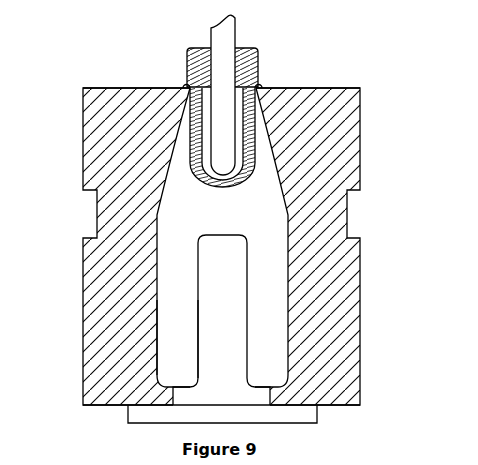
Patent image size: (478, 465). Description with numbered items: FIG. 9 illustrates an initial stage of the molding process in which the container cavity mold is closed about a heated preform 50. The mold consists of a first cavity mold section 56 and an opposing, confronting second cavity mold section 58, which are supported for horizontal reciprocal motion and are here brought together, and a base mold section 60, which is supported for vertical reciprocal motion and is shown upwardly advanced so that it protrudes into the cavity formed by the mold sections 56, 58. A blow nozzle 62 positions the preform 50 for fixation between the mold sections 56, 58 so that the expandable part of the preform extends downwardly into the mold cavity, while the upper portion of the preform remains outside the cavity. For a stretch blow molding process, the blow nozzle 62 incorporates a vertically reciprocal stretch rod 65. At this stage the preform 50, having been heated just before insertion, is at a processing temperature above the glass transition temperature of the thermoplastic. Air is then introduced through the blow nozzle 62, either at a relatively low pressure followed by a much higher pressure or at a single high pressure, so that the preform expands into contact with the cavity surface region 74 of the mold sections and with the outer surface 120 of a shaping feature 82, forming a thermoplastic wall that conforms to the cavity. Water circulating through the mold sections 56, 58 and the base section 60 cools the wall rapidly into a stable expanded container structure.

The preform 50 is at (253, 160).
The first cavity mold section 56 is at (113, 88).
The second cavity mold section 58 is at (330, 88).
The base mold section 60 is at (127, 412).
The blow nozzle 62 is at (208, 33).
The stretch rod 65 is at (236, 130).
The cavity surface region 74 is at (200, 204).
The shaping feature 82 is at (240, 353).
The outer surface 120 is at (200, 307).